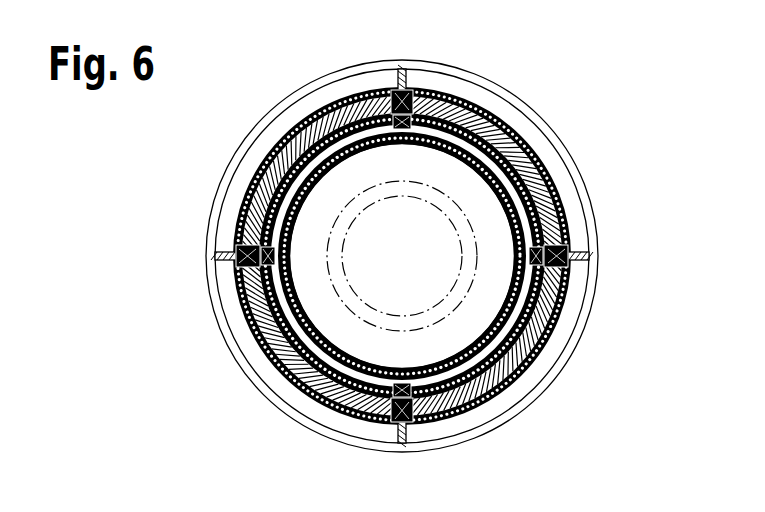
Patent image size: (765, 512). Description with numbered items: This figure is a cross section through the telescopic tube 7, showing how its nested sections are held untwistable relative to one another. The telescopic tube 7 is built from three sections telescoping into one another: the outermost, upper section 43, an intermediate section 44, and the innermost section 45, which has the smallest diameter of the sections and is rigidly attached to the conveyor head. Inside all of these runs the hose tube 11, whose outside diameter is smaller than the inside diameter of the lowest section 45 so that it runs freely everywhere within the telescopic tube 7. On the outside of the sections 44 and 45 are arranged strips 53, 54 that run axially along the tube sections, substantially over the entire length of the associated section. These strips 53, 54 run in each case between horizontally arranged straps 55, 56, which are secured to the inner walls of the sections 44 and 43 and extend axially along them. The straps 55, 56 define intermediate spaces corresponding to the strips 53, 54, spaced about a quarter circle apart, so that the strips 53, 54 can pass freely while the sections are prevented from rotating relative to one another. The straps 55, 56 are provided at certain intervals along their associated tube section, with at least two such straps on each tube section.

The telescopic tube 7 is at (584, 139).
The hose tube 11 is at (358, 330).
The outermost upper section 43 is at (502, 86).
The intermediate section 44 is at (551, 207).
The innermost section 45 is at (548, 326).
The strip 53 is at (447, 133).
The strip 54 is at (396, 88).
The strap 55 is at (343, 147).
The strap 56 is at (293, 131).